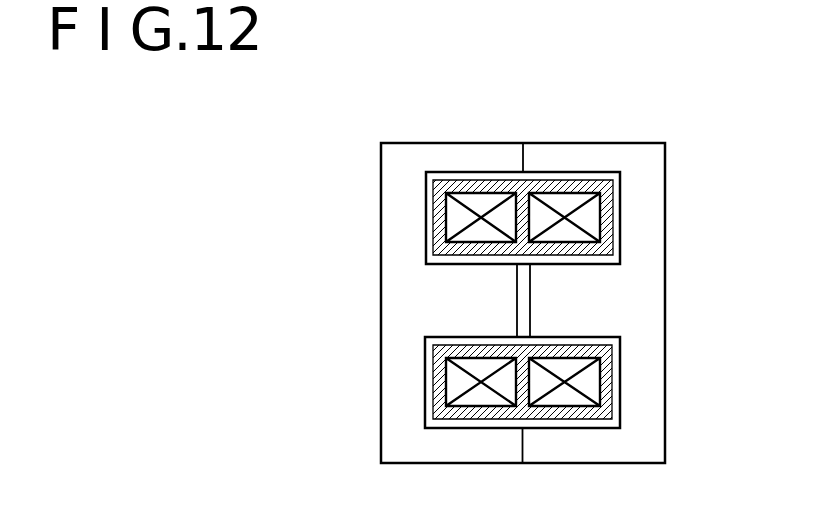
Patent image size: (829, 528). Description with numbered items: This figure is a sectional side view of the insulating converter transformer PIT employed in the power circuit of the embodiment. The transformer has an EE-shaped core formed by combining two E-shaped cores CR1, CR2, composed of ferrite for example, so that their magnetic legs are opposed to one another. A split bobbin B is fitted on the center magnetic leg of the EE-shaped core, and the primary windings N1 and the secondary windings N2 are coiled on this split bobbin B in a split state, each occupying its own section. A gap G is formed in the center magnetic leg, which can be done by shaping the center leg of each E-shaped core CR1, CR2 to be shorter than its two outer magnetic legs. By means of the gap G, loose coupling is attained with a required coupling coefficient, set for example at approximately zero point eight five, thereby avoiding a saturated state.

The E-shaped core CR1 is at (397, 163).
The E-shaped core CR2 is at (637, 160).
The insulating converter transformer PIT is at (555, 112).
The split bobbin B is at (615, 200).
The primary windings N1 is at (463, 217).
The secondary windings N2 is at (585, 218).
The gap G is at (530, 292).